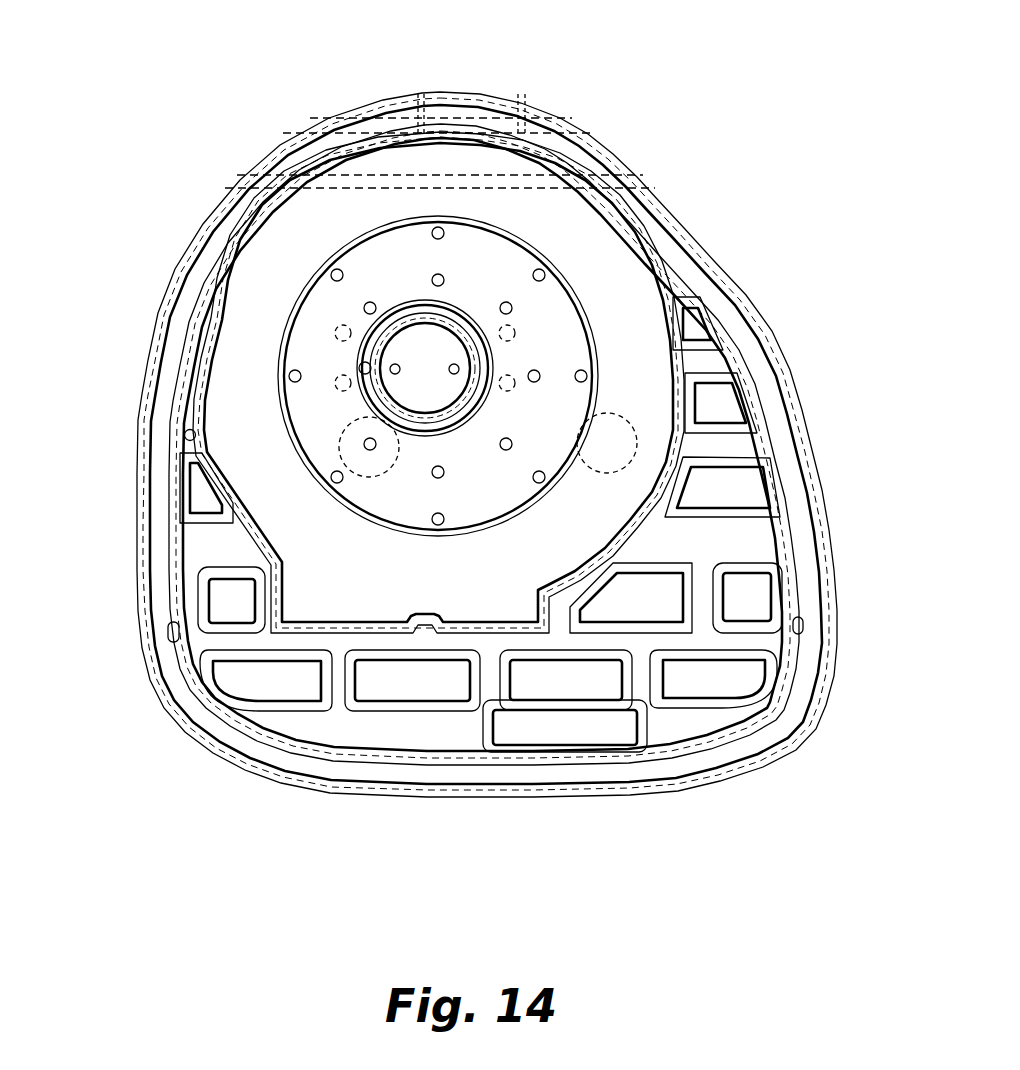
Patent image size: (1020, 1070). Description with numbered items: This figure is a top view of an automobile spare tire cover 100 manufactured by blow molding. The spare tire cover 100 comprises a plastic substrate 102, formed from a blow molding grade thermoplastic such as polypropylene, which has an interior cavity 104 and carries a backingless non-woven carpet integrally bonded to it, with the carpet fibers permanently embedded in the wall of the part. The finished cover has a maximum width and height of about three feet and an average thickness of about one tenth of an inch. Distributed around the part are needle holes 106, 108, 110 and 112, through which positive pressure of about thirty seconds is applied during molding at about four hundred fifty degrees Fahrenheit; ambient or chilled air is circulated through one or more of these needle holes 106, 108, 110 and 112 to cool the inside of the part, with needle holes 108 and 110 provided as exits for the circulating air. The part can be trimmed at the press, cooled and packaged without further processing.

The spare tire cover 100 is at (632, 116).
The plastic substrate 102 is at (776, 352).
The interior cavity 104 is at (760, 540).
The needle hole 106 is at (197, 434).
The needle hole 108 is at (172, 633).
The needle hole 110 is at (803, 625).
The needle hole 112 is at (360, 368).